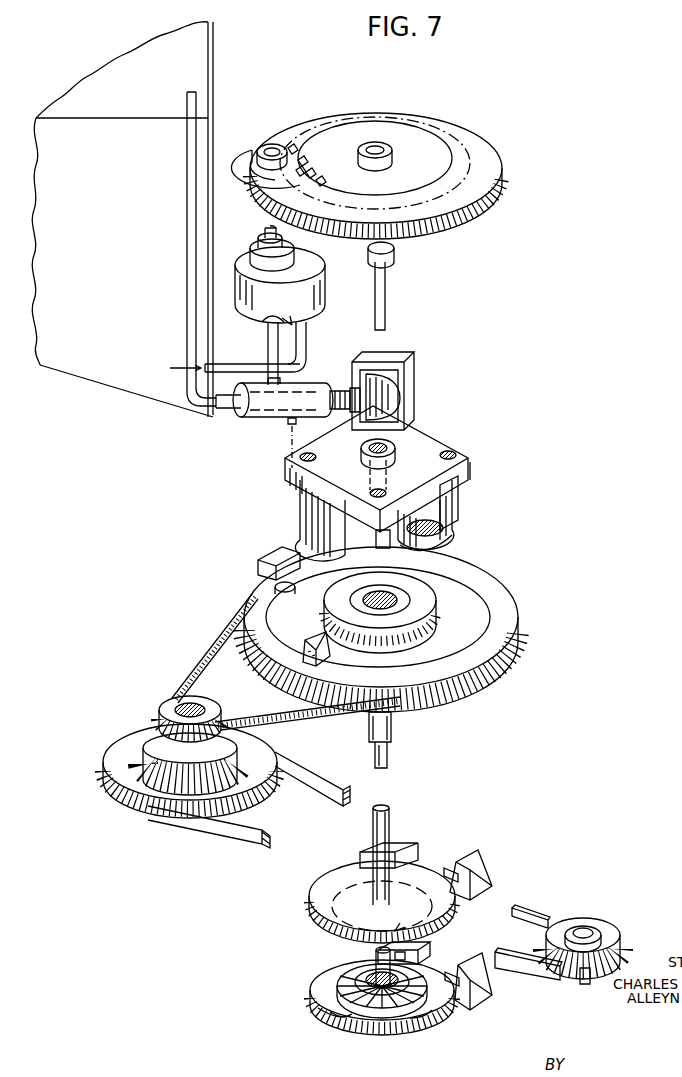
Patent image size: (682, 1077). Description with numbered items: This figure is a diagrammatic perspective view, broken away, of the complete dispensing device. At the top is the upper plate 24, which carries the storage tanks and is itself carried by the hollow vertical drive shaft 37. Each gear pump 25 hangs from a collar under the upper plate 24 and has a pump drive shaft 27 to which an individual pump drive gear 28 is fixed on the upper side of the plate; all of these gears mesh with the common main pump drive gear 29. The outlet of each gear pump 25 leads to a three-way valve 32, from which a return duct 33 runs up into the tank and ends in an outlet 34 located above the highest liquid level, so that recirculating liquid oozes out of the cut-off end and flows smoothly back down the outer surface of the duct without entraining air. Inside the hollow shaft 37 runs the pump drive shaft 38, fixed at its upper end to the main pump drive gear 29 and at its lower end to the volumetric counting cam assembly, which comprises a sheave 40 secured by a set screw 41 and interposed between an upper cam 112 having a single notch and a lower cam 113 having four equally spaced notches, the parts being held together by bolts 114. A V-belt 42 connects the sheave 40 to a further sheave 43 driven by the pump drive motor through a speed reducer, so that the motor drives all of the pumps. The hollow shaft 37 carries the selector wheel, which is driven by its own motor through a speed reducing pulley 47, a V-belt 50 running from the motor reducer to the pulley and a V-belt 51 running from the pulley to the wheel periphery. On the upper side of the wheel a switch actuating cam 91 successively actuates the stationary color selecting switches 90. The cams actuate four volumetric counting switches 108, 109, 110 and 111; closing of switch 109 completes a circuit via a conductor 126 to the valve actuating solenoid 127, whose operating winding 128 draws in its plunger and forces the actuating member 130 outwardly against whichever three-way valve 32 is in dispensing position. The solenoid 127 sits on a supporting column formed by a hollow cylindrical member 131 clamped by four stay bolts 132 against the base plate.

The upper plate 24 is at (497, 210).
The gear pump 25 is at (313, 310).
The pump drive shaft 27 is at (268, 238).
The pump drive gear 28 is at (256, 167).
The main pump drive gear 29 is at (452, 172).
The three-way valve 32 is at (305, 376).
The return duct 33 is at (197, 334).
The outlet 34 is at (193, 92).
The hollow vertical drive shaft 37 is at (392, 731).
The pump drive shaft 38 is at (388, 812).
The sheave 40 is at (344, 1010).
The set screw 41 is at (368, 1000).
The V-belt 42 is at (523, 908).
The sheave 43 is at (566, 918).
The speed reducing pulley 47 is at (150, 736).
The V-belt 50 is at (246, 836).
The V-belt 51 is at (240, 628).
The stationary color selecting switch 90 is at (272, 556).
The switch actuating cam 91 is at (330, 651).
The volumetric counting switch 108 is at (400, 848).
The volumetric counting switch 109 is at (474, 853).
The volumetric counting switch 110 is at (426, 950).
The volumetric counting switch 111 is at (480, 1001).
The upper cam 112 is at (286, 884).
The lower cam 113 is at (303, 1003).
The bolts 114 is at (386, 1010).
The conductor 126 is at (377, 469).
The valve actuating solenoid 127 is at (417, 362).
The operating winding 128 is at (408, 405).
The actuating member 130 is at (350, 410).
The hollow cylindrical member 131 is at (440, 534).
The stay bolts 132 is at (458, 502).